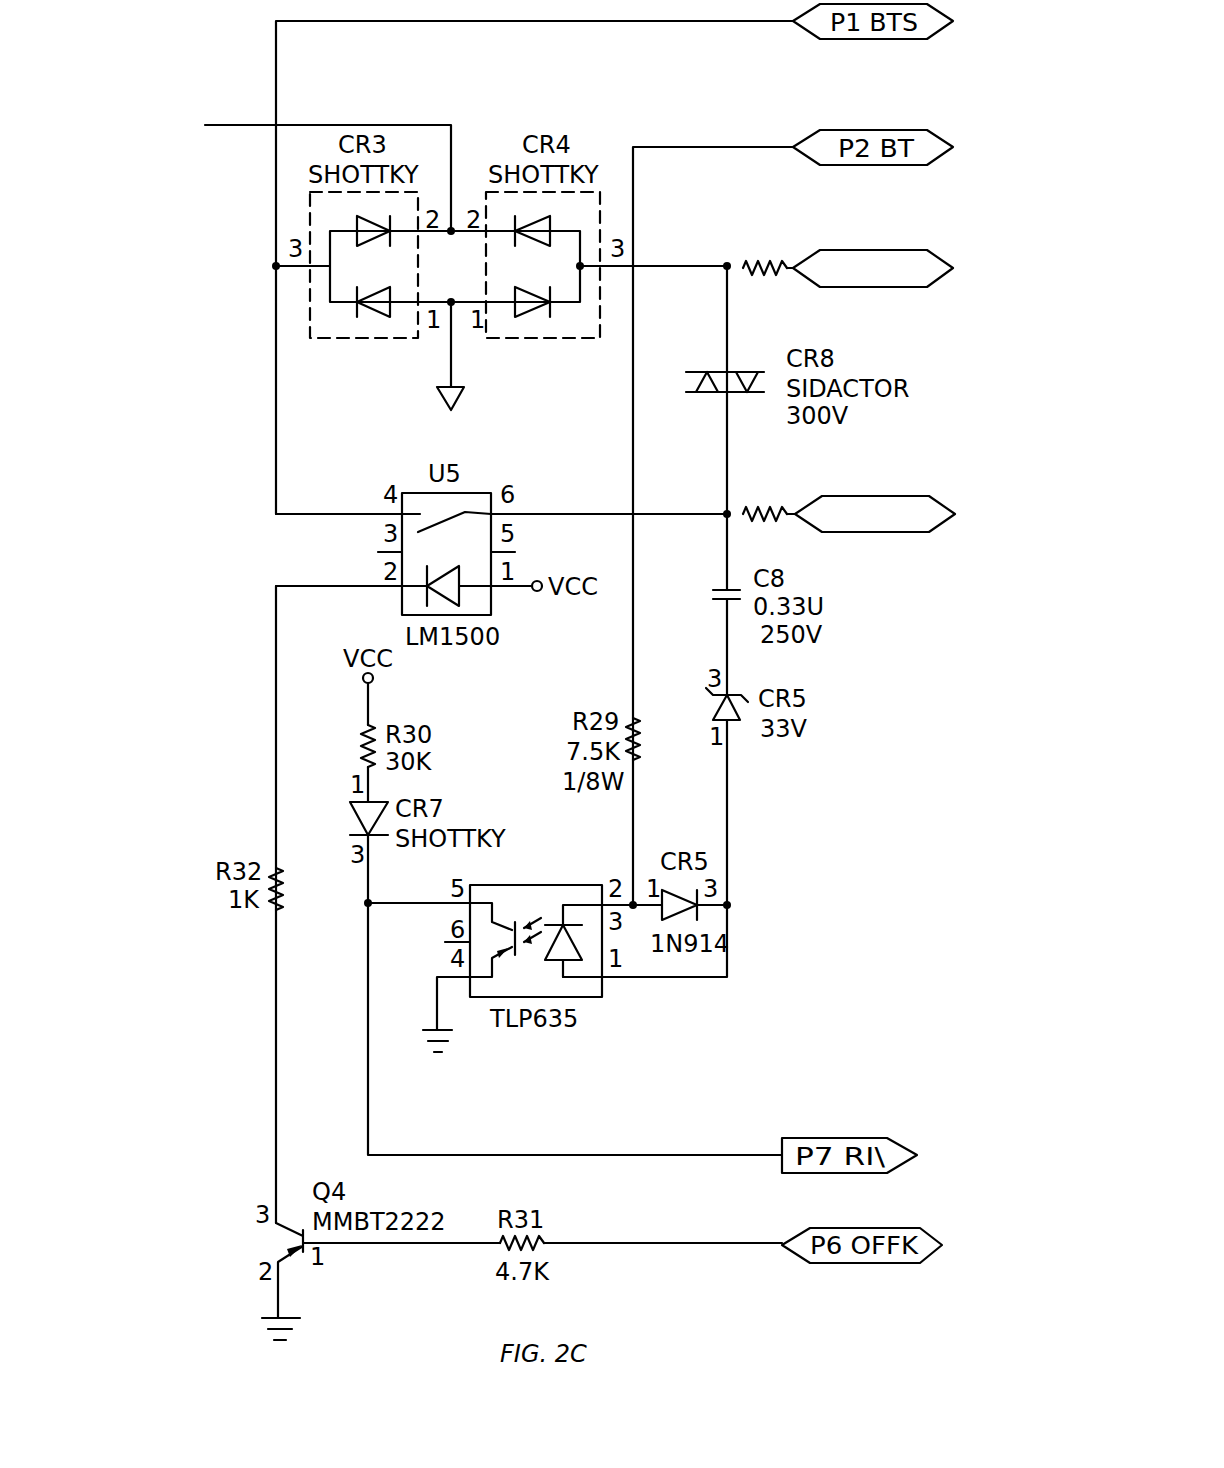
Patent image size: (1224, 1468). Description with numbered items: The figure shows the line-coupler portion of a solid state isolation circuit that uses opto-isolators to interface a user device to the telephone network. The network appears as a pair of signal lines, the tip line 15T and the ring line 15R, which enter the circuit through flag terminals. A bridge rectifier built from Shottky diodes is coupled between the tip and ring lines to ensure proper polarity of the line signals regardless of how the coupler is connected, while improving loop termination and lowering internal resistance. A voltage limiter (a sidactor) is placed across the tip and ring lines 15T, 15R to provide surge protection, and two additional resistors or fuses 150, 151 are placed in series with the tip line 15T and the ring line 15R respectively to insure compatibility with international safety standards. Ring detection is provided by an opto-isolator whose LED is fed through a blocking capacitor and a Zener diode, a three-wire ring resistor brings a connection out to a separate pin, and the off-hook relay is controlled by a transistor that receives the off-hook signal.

The resistor or fuse 150 is at (767, 254).
The resistor or fuse 151 is at (769, 499).
The tip signal line 15T is at (912, 250).
The ring signal line 15R is at (922, 497).